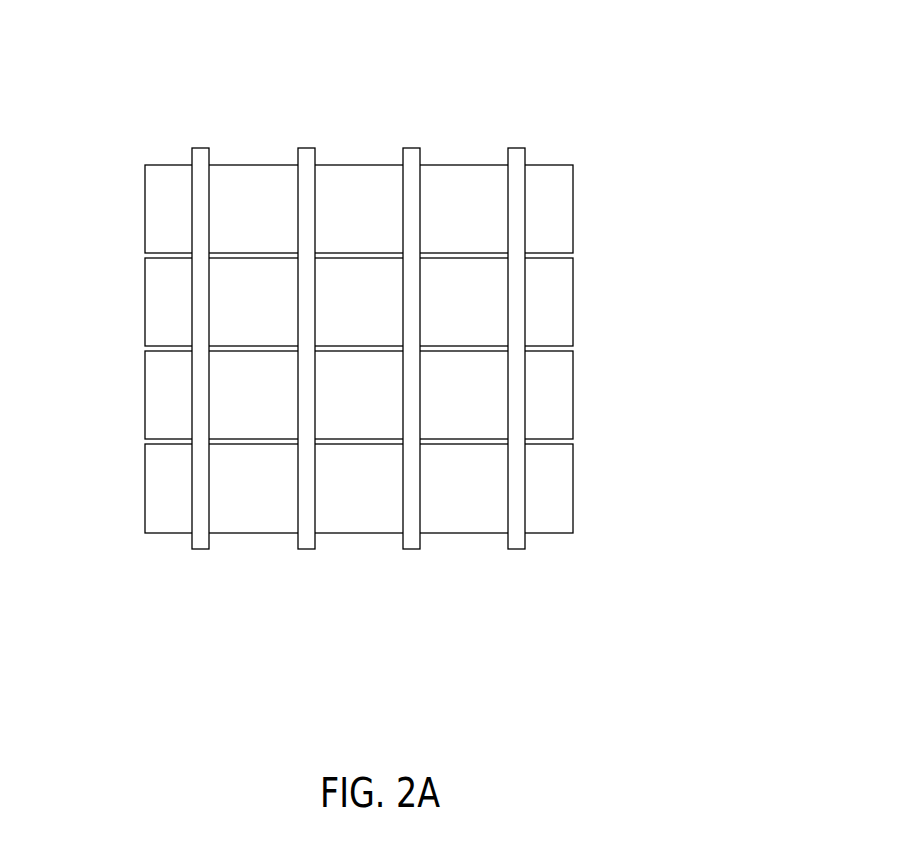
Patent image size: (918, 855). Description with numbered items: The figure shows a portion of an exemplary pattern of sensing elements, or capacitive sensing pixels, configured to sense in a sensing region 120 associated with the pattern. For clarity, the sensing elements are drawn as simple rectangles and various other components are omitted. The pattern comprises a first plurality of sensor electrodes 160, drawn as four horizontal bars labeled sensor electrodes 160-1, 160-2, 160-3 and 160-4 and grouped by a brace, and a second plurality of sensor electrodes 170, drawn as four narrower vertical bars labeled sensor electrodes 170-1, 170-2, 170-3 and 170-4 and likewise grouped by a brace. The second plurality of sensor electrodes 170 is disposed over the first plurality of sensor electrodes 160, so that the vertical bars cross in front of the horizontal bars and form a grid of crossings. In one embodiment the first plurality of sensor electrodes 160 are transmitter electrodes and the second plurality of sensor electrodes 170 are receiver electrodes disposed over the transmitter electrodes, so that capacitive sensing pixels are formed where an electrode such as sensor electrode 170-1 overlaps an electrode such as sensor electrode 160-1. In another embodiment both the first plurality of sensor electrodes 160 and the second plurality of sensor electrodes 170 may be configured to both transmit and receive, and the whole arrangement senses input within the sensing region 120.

The sensing region 120 is at (479, 58).
The first plurality of sensor electrodes 160 is at (119, 162).
The sensor electrode 160-1 is at (573, 209).
The sensor electrode 160-2 is at (573, 302).
The sensor electrode 160-3 is at (573, 394).
The sensor electrode 160-4 is at (573, 488).
The second plurality of sensor electrodes 170 is at (540, 135).
The sensor electrode 170-1 is at (198, 550).
The sensor electrode 170-2 is at (305, 550).
The sensor electrode 170-3 is at (411, 550).
The sensor electrode 170-4 is at (516, 550).